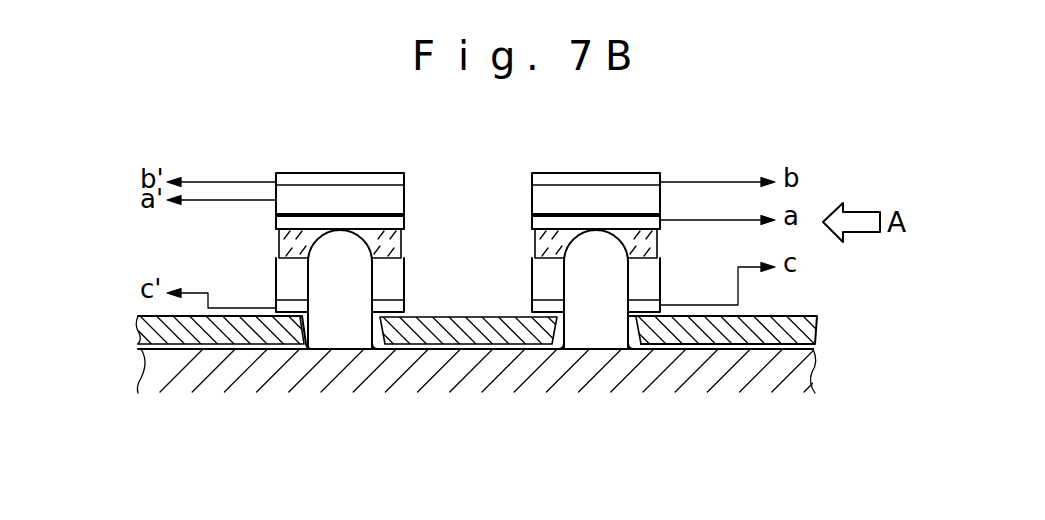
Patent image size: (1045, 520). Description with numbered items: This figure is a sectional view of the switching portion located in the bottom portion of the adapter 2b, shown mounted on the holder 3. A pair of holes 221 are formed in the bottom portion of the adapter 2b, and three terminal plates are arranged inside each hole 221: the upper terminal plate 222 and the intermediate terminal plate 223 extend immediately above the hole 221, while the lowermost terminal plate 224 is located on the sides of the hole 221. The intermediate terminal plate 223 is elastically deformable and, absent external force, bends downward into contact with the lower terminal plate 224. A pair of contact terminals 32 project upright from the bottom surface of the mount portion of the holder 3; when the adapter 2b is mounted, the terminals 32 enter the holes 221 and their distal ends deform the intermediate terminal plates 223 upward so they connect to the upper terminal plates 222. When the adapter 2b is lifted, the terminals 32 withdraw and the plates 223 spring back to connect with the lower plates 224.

The upper terminal plate 222 is at (545, 192).
The intermediate terminal plate 223 is at (542, 225).
The lower terminal plate 224 is at (545, 275).
The contact terminal 32 is at (343, 270).
The hole 221 is at (312, 350).
The adapter 2b is at (818, 327).
The holder 3 is at (811, 370).